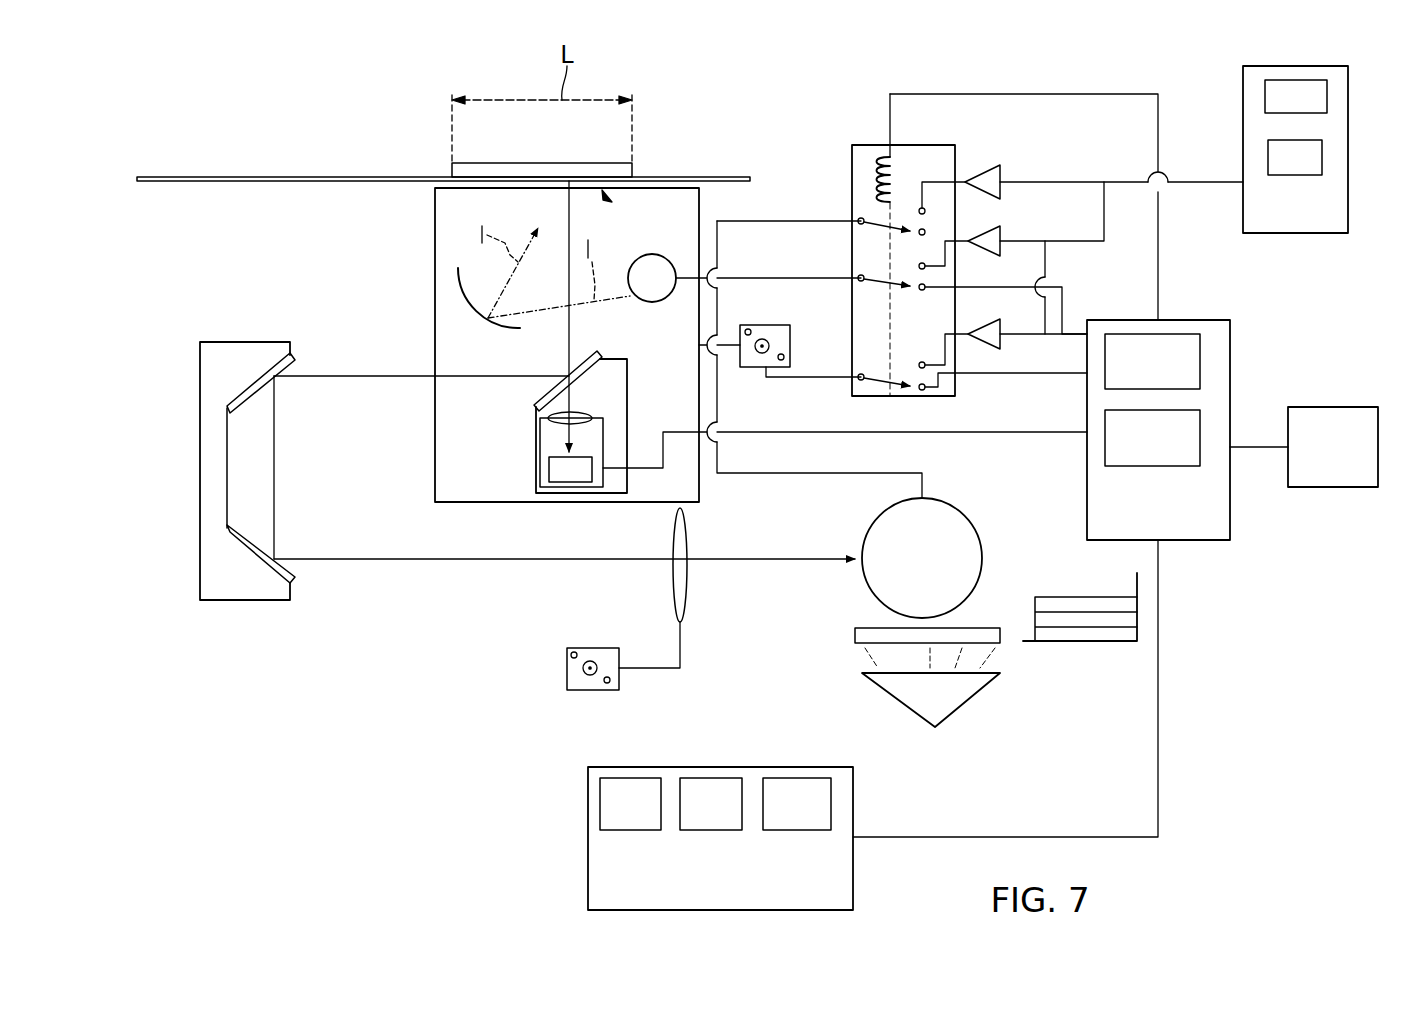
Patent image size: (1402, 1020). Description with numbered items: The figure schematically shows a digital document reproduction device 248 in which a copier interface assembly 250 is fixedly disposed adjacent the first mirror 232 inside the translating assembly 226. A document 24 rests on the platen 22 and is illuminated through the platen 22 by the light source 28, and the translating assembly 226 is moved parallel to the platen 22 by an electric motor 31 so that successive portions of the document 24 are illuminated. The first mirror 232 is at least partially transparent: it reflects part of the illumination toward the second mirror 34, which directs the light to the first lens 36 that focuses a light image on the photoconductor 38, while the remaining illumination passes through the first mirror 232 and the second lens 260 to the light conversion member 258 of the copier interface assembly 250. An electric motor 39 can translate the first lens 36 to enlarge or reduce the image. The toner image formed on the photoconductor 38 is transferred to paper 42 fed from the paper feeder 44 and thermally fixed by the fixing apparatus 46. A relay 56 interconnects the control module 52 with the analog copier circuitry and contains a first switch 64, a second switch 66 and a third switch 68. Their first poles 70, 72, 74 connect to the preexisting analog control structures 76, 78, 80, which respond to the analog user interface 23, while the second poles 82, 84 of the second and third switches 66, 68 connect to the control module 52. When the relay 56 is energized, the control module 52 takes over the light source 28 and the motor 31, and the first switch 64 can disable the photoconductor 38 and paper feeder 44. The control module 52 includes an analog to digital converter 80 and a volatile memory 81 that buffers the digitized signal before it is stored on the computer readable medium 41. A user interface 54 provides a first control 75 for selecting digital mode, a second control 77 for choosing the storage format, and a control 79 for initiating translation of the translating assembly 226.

The platen 22 is at (292, 176).
The document 24 is at (498, 162).
The light source 28 is at (655, 254).
The translating assembly 226 is at (435, 240).
The first mirror 232 is at (597, 353).
The copier interface assembly 250 is at (627, 414).
The second lens 260 is at (548, 420).
The light conversion member 258 is at (540, 468).
The electric motor 31 is at (762, 325).
The second mirror 34 is at (200, 543).
The first lens 36 is at (672, 583).
The photoconductor 38 is at (907, 572).
The electric motor 39 is at (619, 676).
The paper 42 is at (855, 636).
The paper feeder 44 is at (1083, 641).
The fixing apparatus 46 is at (965, 705).
The relay 56 is at (925, 145).
The first switch 64 is at (861, 220).
The second switch 66 is at (861, 277).
The third switch 68 is at (861, 376).
The first pole of first switch 70 is at (925, 211).
The first pole of second switch 72 is at (920, 265).
The first pole of third switch 74 is at (922, 362).
The analog control structure 76 is at (990, 165).
The analog control structure 78 is at (990, 230).
The analog control structure / analog to digital converter 80 is at (992, 340).
The second pole of second switch 82 is at (938, 285).
The second pole of third switch 84 is at (918, 390).
The control module 52 is at (1190, 320).
The volatile memory 81 is at (1125, 466).
The computer readable medium 41 is at (1335, 407).
The user interface 23 is at (1340, 233).
The user interface 54 is at (605, 767).
The first control 75 is at (600, 805).
The second control 77 is at (700, 830).
The control 79 is at (800, 778).
The digital document reproduction device 248 is at (495, 645).